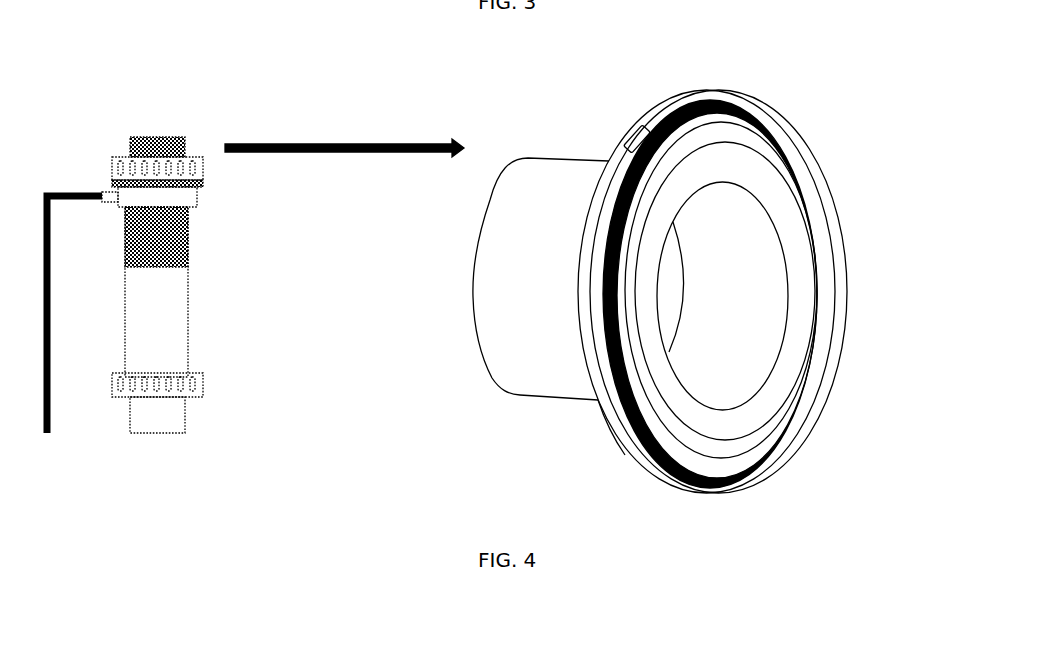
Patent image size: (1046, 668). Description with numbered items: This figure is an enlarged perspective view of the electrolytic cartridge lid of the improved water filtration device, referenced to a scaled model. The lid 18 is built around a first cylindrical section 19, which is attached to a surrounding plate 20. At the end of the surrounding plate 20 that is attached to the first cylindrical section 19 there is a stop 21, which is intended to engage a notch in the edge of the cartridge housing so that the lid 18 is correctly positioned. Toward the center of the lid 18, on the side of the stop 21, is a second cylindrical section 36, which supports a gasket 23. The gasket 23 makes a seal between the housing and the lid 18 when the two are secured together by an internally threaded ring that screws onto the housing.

The lid 18 is at (710, 266).
The first cylindrical section 19 is at (550, 188).
The surrounding plate 20 is at (720, 84).
The stop 21 is at (645, 125).
The gasket 23 is at (600, 415).
The second cylindrical section 36 is at (711, 460).